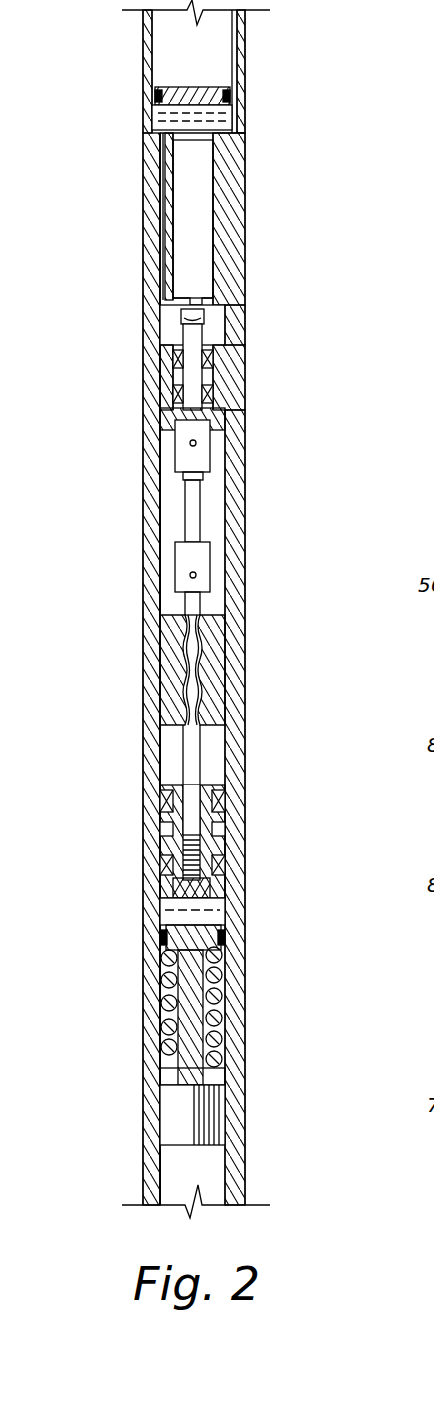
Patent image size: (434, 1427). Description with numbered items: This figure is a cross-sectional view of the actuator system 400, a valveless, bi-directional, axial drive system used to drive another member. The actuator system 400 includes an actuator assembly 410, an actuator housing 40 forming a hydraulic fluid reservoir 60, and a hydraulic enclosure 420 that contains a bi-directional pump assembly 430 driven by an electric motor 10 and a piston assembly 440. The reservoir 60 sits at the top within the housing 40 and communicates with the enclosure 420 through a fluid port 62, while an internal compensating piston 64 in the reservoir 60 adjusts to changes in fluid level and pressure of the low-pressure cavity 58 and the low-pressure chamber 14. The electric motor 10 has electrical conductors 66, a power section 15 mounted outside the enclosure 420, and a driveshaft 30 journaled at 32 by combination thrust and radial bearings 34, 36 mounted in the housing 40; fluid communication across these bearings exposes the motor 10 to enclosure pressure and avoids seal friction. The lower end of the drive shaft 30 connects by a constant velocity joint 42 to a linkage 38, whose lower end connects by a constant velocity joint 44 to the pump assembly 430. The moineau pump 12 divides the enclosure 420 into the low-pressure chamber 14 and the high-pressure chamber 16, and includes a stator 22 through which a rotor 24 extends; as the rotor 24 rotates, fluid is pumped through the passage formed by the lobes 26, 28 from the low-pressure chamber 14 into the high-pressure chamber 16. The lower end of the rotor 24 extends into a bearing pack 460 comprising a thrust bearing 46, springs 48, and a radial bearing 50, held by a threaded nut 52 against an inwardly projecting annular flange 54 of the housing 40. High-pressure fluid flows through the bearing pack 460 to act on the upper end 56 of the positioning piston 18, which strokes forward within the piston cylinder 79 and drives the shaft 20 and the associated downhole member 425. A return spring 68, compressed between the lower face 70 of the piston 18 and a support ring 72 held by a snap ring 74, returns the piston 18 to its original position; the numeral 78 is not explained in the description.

The actuator system 400 is at (289, 95).
The actuator assembly 410 is at (143, 21).
The electrical conductors 66 is at (244, 38).
The internal compensating piston 64 is at (168, 88).
The hydraulic fluid reservoir 60 is at (240, 122).
The actuator housing 40 is at (155, 548).
The fluid port 62 is at (165, 262).
The electric motor 10 is at (196, 227).
The power section 15 is at (192, 188).
The low-pressure cavity 58 is at (172, 328).
The hydraulic enclosure 420 is at (228, 330).
The journaled location 32 is at (222, 378).
The combination thrust and radial bearing 34 is at (175, 360).
The combination thrust and radial bearing 36 is at (175, 393).
The driveshaft 30 is at (175, 418).
The constant velocity joint 42 is at (178, 450).
The linkage 38 is at (192, 493).
The low-pressure chamber 14 is at (212, 521).
The constant velocity joint 44 is at (180, 563).
The bi-directional pump assembly 430 is at (198, 603).
The stator 22 is at (170, 632).
The lobe 28 is at (225, 640).
The moineau pump 12 is at (165, 656).
The lobe 26 is at (190, 680).
The rotor 24 is at (190, 713).
The high-pressure chamber 16 is at (183, 770).
The bearing pack 460 is at (222, 798).
The thrust bearing 46 is at (168, 800).
The inwardly projecting annular flange 54 is at (225, 818).
The springs 48 is at (167, 838).
The radial bearing 50 is at (172, 862).
The threaded nut 52 is at (175, 888).
The upper end of piston 56 is at (232, 905).
The piston assembly 440 is at (233, 932).
The positioning piston 18 is at (168, 920).
The return spring 68 is at (222, 1002).
The shaft 20 is at (165, 962).
The piston cylinder 79 is at (168, 1007).
The support ring 72 is at (165, 1035).
The lower face 70 is at (222, 972).
The spring coil 78 is at (222, 1057).
The snap ring 74 is at (178, 1065).
The downhole member 425 is at (225, 1113).